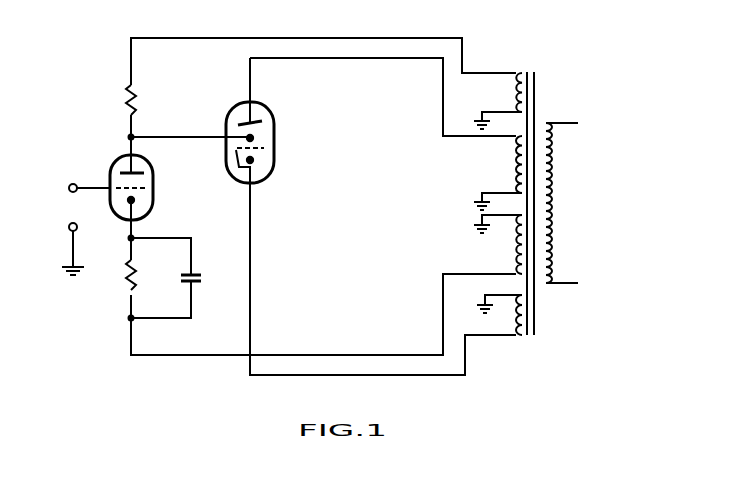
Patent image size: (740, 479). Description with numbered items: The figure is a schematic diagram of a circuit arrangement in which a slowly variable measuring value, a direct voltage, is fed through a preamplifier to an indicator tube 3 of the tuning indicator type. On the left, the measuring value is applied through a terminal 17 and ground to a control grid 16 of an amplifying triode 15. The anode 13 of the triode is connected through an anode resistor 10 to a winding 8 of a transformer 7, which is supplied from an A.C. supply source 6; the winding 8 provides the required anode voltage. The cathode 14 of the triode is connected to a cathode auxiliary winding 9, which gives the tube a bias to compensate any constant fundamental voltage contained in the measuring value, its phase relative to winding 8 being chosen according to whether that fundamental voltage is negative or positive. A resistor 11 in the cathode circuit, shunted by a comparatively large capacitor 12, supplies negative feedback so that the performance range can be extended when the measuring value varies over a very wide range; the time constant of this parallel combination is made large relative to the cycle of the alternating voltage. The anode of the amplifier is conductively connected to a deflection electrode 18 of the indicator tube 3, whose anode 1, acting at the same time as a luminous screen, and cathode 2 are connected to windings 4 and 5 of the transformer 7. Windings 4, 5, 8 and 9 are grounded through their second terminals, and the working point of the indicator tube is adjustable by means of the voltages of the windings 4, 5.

The anode 1 is at (262, 122).
The cathode 2 is at (261, 165).
The indicator tube 3 is at (244, 142).
The winding 4 is at (498, 173).
The winding 5 is at (499, 315).
The A.C. supply source 6 is at (562, 203).
The transformer 7 is at (530, 194).
The winding 8 is at (498, 101).
The cathode auxiliary winding 9 is at (498, 244).
The anode resistor 10 is at (142, 100).
The resistor 11 is at (142, 276).
The capacitor 12 is at (173, 278).
The anode 13 is at (147, 173).
The cathode 14 is at (152, 216).
The amplifying triode 15 is at (122, 187).
The control grid 16 is at (145, 188).
The terminal 17 is at (76, 189).
The deflection electrode 18 is at (271, 138).